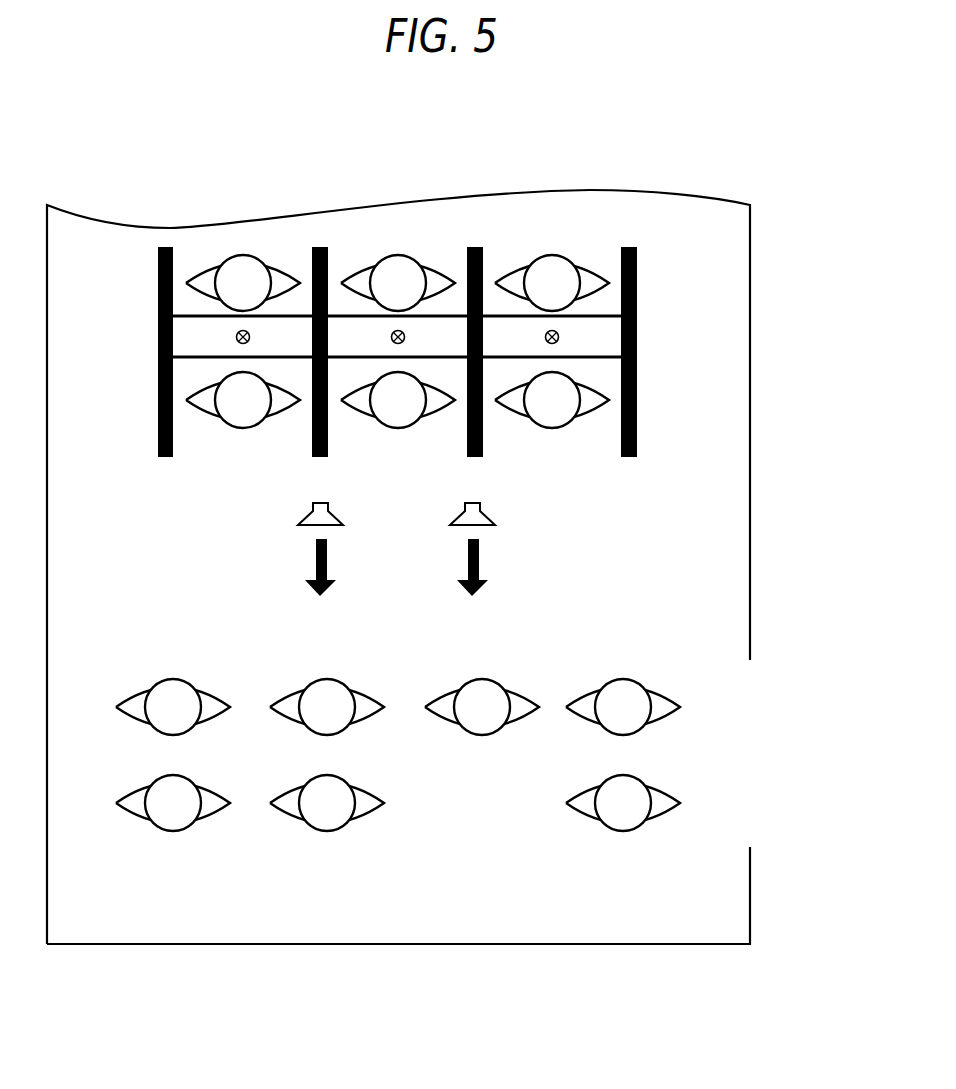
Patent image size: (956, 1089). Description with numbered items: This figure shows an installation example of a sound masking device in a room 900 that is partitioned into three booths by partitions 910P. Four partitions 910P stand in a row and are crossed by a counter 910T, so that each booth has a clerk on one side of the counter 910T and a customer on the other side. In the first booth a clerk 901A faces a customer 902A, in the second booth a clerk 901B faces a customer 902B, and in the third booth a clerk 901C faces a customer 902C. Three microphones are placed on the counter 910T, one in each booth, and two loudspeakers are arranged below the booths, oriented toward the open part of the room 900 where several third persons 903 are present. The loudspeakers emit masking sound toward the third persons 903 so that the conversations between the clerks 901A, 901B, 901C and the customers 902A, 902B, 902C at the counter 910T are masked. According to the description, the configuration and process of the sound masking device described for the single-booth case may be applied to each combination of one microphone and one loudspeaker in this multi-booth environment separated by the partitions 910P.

The room 900 is at (110, 190).
The clerk 901A is at (234, 240).
The clerk 901B is at (414, 244).
The clerk 901C is at (567, 245).
The customer 902A is at (238, 444).
The customer 902B is at (393, 444).
The customer 902C is at (548, 444).
The third person 903 is at (561, 825).
The counter 910T is at (614, 336).
The partition 910P is at (655, 385).